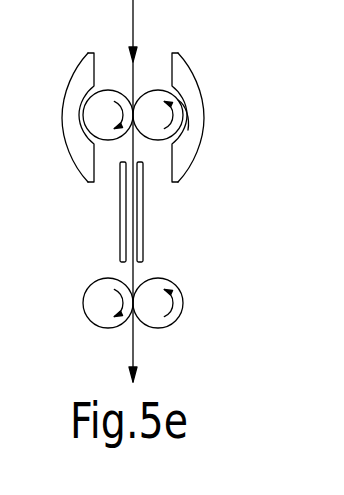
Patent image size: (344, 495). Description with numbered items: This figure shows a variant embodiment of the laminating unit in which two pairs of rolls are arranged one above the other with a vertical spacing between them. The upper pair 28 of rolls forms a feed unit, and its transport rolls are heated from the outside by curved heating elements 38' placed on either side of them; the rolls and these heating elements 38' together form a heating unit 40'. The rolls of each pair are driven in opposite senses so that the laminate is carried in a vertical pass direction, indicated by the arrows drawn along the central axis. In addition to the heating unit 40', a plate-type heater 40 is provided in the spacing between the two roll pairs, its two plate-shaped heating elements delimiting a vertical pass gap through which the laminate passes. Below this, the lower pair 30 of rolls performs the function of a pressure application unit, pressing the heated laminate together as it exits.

The upper pair of rolls 28 is at (153, 90).
The heating elements 38' is at (152, 106).
The heating unit 40' is at (230, 129).
The plate-type heater 40 is at (165, 212).
The lower pair of rolls 30 is at (160, 287).